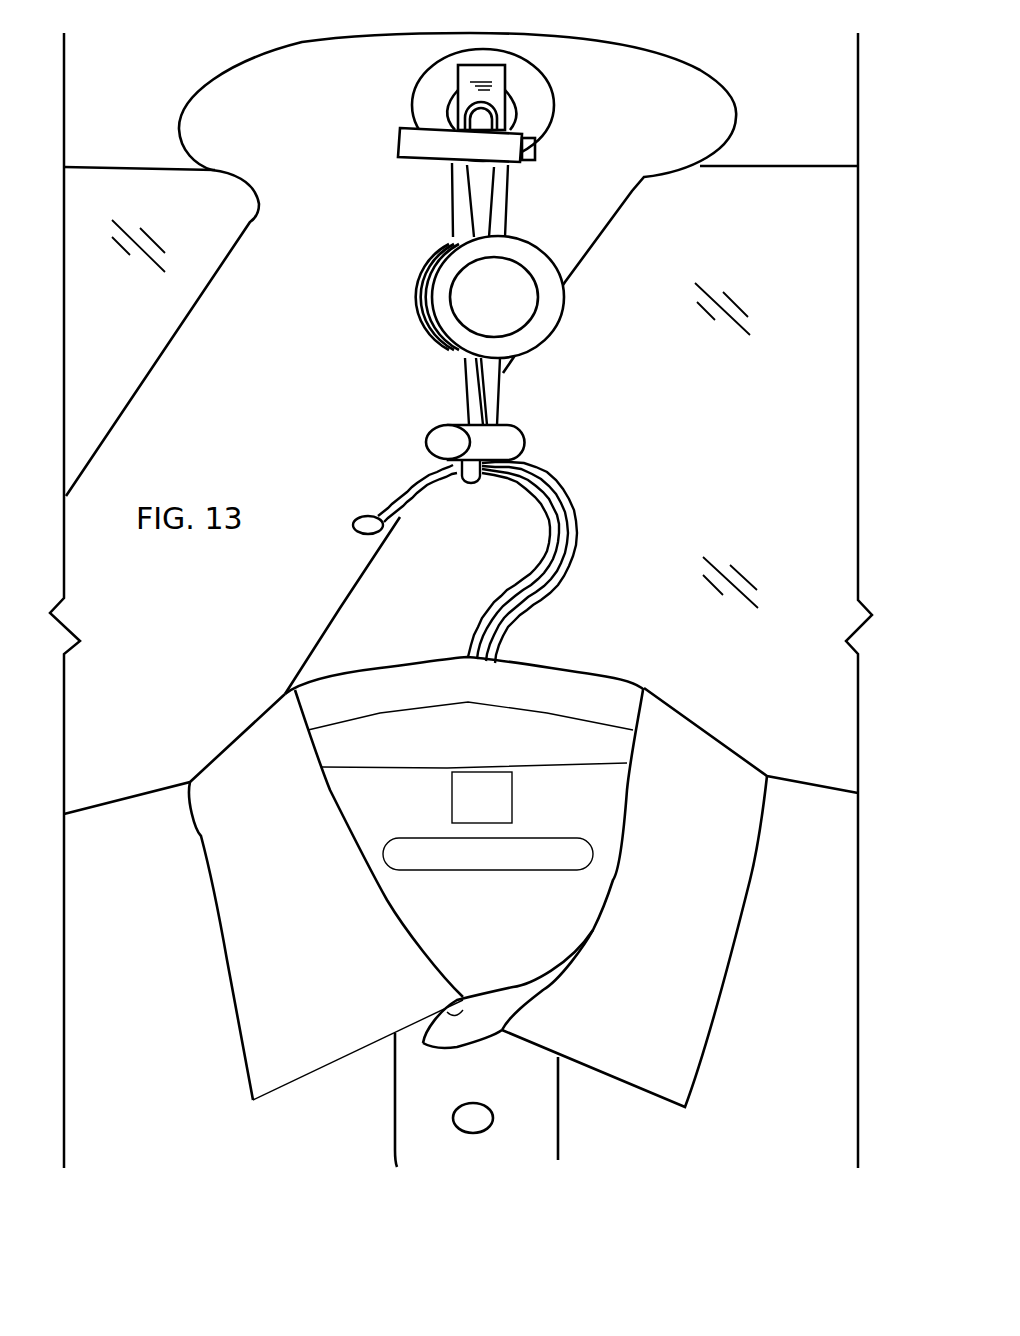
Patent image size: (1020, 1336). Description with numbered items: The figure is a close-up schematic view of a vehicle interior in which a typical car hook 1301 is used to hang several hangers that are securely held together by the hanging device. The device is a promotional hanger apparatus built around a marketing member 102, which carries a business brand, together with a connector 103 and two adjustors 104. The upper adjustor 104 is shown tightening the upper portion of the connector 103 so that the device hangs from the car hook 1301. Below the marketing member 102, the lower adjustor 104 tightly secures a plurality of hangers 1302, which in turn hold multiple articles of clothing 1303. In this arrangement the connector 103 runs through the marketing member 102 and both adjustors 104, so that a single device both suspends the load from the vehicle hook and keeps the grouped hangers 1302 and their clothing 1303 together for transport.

The car hook 1301 is at (505, 112).
The adjustor 104 is at (398, 147).
The connector 103 is at (450, 238).
The marketing member 102 is at (410, 297).
The plurality of hangers 1302 is at (573, 510).
The articles of clothing 1303 is at (715, 729).